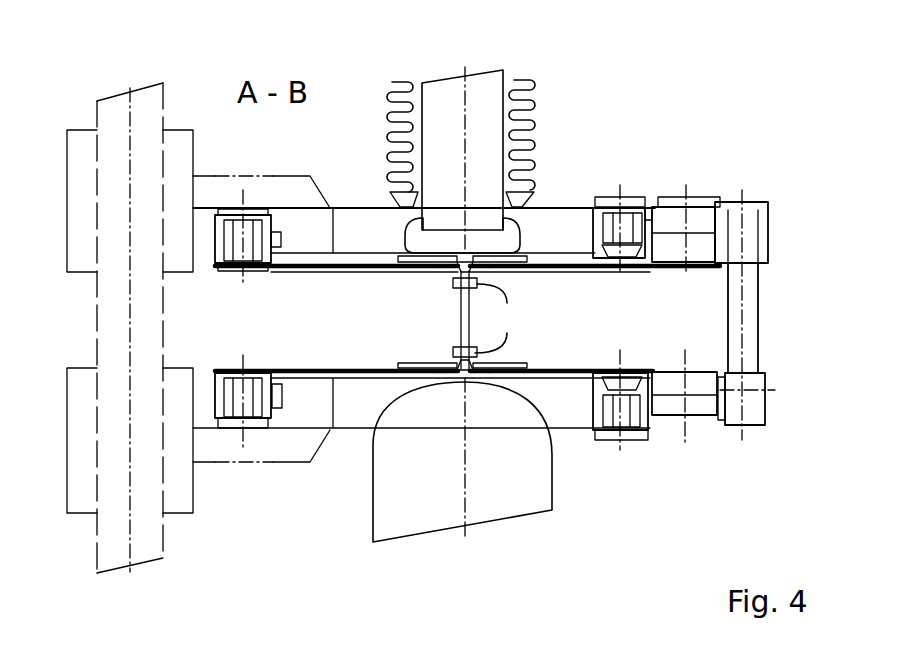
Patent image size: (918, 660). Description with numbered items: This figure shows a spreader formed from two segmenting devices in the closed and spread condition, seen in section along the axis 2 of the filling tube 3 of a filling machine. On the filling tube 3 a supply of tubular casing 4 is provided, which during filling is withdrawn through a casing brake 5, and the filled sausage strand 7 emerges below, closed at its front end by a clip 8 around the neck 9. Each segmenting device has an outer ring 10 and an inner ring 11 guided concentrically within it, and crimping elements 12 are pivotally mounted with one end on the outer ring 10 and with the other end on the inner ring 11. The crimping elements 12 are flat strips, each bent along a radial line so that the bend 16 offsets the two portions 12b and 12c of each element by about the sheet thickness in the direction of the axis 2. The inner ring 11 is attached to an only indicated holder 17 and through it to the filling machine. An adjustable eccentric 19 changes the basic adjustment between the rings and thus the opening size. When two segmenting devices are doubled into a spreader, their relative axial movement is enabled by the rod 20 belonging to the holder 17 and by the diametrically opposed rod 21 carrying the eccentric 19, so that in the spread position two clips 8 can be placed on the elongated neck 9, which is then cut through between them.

The axis 2 is at (462, 88).
The filling tube 3 is at (485, 90).
The tubular casing 4 is at (532, 103).
The casing brake 5 is at (520, 198).
The filled sausage strand 7 is at (537, 490).
The clip 8 is at (494, 318).
The neck 9 is at (461, 306).
The outer ring 10 is at (678, 195).
The inner ring 11 is at (318, 245).
The crimping element 12 is at (340, 366).
The portion of crimping element 12b is at (405, 275).
The portion of crimping element 12c is at (637, 372).
The bend 16 is at (463, 258).
The holder 17 is at (213, 182).
The adjustable eccentric 19 is at (753, 236).
The rod 20 is at (150, 86).
The rod 21 is at (752, 346).